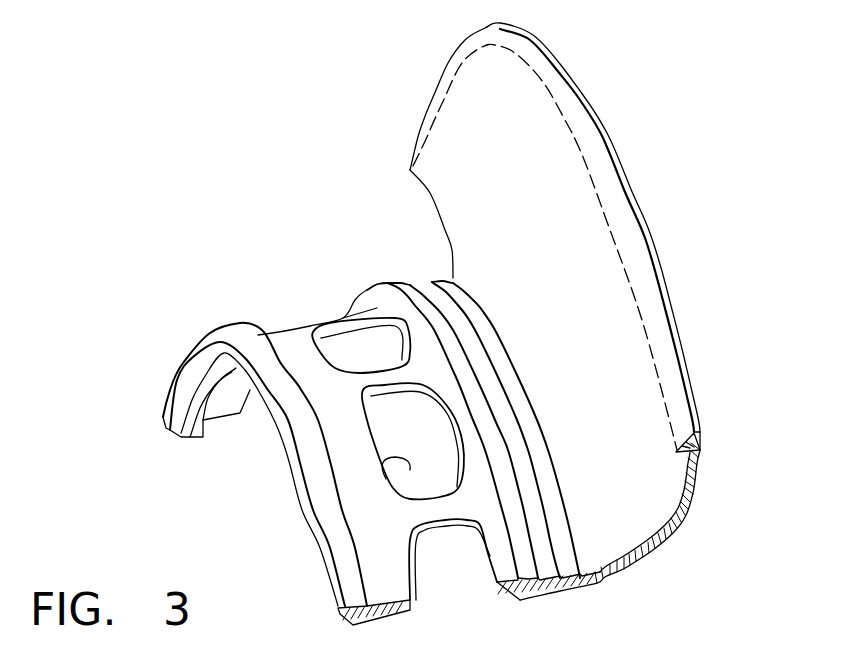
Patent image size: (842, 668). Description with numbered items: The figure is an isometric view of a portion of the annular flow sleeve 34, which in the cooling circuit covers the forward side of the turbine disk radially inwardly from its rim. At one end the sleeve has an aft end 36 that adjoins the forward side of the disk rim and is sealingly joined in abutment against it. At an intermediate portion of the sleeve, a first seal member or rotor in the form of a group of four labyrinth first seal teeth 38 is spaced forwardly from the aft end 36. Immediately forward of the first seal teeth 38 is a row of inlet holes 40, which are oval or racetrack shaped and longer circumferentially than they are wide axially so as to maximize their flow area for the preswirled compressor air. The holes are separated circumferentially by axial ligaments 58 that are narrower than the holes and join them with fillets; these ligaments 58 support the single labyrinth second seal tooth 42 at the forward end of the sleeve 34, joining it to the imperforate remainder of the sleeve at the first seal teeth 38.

The flow sleeve 34 is at (655, 230).
The aft end 36 is at (703, 452).
The first seal teeth 38 is at (425, 281).
The inlet holes 40 is at (400, 487).
The second seal tooth 42 is at (225, 323).
The axial ligaments 58 is at (333, 325).